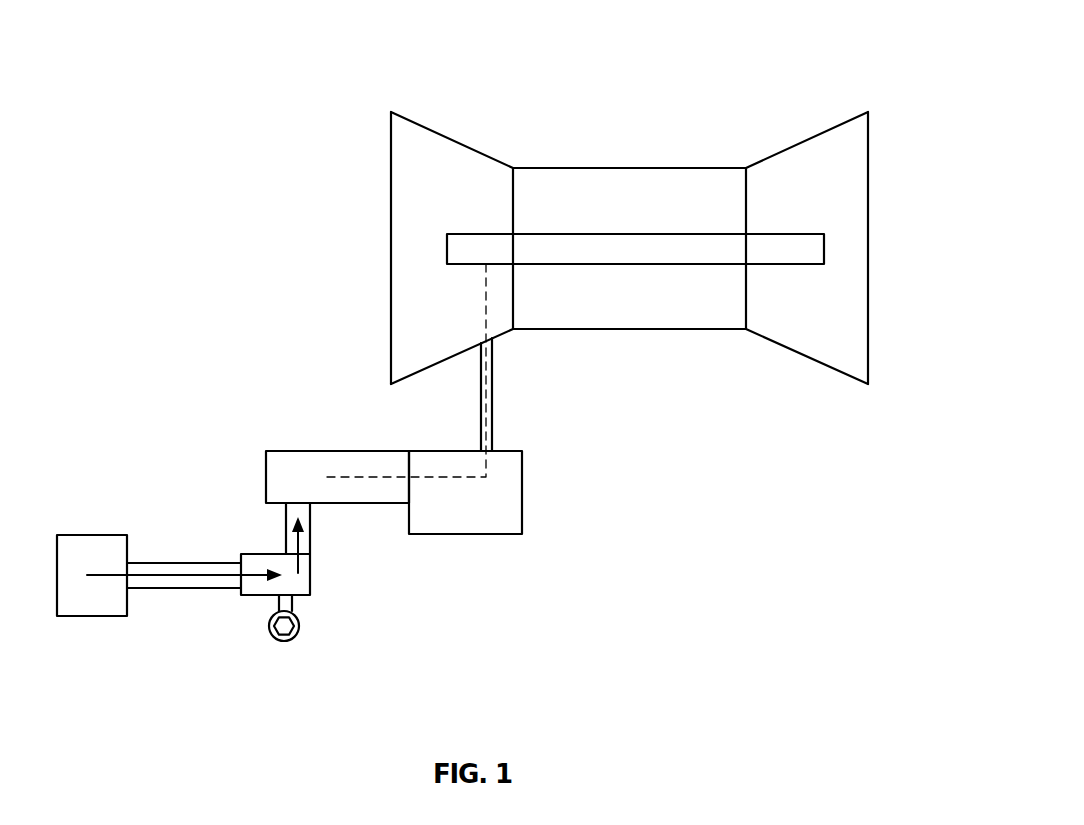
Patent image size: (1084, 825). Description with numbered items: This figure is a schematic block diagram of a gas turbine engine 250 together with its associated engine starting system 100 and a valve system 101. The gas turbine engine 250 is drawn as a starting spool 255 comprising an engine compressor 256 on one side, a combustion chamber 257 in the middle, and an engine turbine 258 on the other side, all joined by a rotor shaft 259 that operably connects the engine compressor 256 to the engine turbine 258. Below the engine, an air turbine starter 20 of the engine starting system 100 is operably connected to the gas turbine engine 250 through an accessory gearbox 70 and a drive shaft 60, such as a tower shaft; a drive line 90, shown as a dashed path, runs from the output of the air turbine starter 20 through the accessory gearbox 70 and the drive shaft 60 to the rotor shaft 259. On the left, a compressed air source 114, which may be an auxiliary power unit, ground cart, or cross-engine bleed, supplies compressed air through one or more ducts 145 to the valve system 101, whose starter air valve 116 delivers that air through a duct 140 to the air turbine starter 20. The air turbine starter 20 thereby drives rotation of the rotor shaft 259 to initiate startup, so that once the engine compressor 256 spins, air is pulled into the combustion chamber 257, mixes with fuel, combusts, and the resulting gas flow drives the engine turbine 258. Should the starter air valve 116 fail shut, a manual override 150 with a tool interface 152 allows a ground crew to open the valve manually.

The engine starting system 100 is at (298, 365).
The valve system 101 is at (429, 578).
The air turbine starter 20 is at (328, 451).
The drive shaft 60 is at (492, 395).
The accessory gearbox 70 is at (513, 534).
The drive line 90 is at (486, 302).
The compressed air source 114 is at (92, 616).
The starter air valve 116 is at (310, 573).
The duct 140 is at (310, 518).
The ducts 145 is at (184, 588).
The manual override 150 is at (283, 641).
The tool interface 152 is at (295, 626).
The gas turbine engine 250 is at (391, 155).
The starting spool 255 is at (533, 214).
The engine compressor 256 is at (453, 158).
The combustion chamber 257 is at (658, 184).
The engine turbine 258 is at (836, 173).
The rotor shaft 259 is at (835, 250).